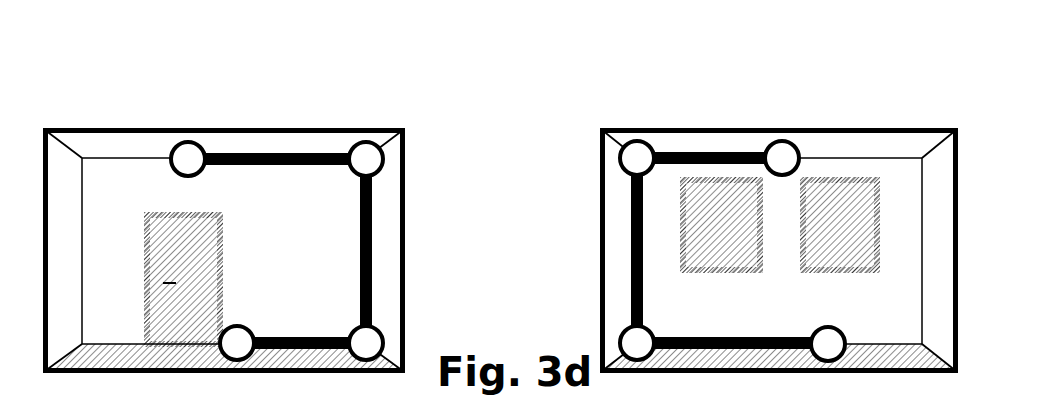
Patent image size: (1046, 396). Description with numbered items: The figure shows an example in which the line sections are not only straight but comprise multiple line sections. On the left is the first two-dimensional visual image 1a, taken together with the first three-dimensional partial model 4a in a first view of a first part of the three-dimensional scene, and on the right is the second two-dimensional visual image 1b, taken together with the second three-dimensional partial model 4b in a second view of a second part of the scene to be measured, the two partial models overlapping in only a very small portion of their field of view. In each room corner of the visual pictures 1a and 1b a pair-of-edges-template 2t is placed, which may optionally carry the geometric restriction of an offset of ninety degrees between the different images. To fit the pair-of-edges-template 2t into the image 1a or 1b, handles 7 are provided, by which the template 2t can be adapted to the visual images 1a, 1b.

The first 2D-visual-image 1a is at (224, 230).
The first 3D-partial-model 4a is at (224, 250).
The second 2D-visual-image 1b is at (779, 230).
The second 3D-partial-model 4b is at (779, 250).
The pair-of-edges-template 2t is at (508, 222).
The handles 7 is at (508, 251).